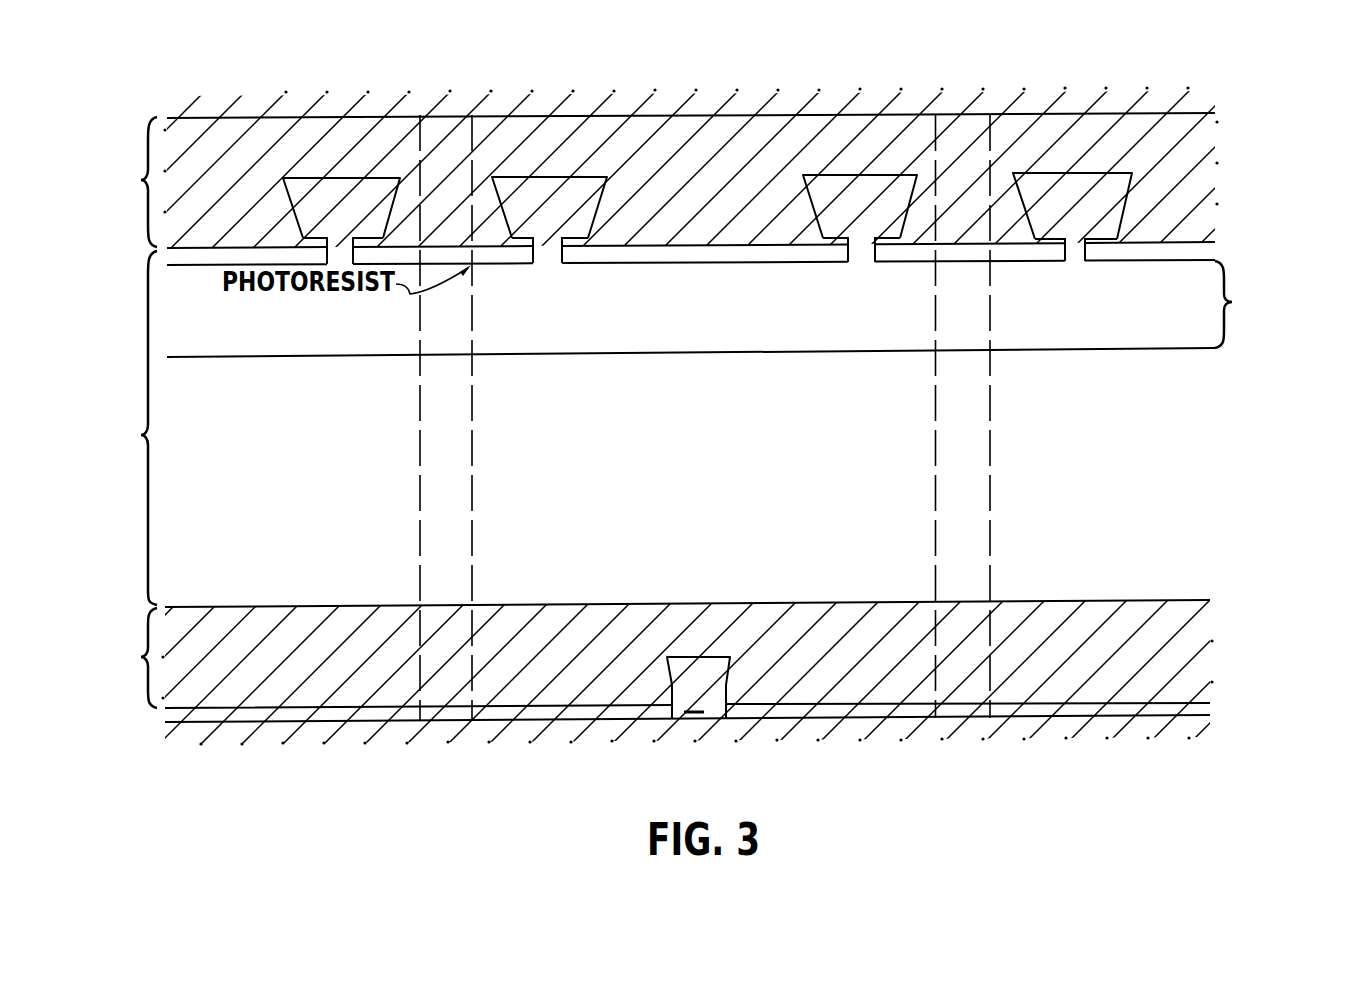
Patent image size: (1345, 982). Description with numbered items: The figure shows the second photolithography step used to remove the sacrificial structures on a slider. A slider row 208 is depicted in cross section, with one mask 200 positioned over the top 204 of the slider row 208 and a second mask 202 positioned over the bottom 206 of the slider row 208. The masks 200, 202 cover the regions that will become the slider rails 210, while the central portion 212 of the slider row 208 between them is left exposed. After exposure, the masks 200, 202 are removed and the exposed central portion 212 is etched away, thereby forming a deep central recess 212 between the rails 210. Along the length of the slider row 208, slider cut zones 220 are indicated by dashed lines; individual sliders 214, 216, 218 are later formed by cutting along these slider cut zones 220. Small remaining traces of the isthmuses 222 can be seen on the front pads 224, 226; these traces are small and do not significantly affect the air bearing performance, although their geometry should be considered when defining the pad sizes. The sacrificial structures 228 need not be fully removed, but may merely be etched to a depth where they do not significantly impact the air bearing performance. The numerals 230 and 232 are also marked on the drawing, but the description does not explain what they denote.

The mask 200 is at (1213, 149).
The mask 202 is at (1192, 652).
The top of the slider row 204 is at (833, 125).
The bottom of the slider row 206 is at (849, 692).
The slider row 208 is at (1182, 428).
The slider rails 210 is at (141, 180).
The central portion of the slider row 212 is at (141, 440).
The individual slider 214 is at (296, 128).
The individual slider 216 is at (548, 128).
The individual slider 218 is at (1108, 125).
The slider cut zones 220 is at (437, 128).
The isthmuses 222 is at (843, 240).
The front pad 224 is at (548, 222).
The front pad 226 is at (870, 217).
The sacrificial structures 228 is at (1232, 302).
The bottom layer 230 is at (1183, 768).
The lower recess 232 is at (711, 690).